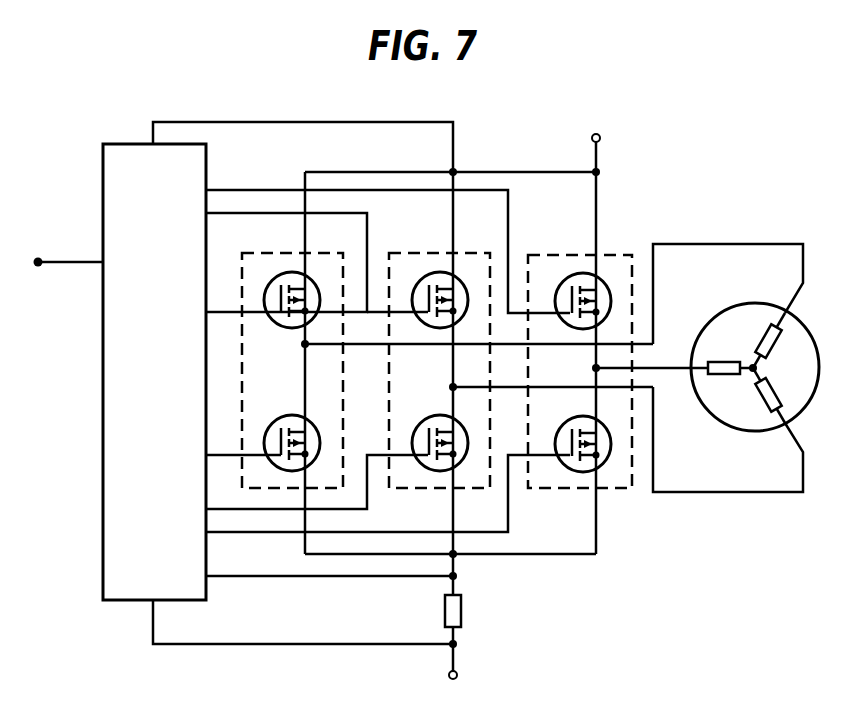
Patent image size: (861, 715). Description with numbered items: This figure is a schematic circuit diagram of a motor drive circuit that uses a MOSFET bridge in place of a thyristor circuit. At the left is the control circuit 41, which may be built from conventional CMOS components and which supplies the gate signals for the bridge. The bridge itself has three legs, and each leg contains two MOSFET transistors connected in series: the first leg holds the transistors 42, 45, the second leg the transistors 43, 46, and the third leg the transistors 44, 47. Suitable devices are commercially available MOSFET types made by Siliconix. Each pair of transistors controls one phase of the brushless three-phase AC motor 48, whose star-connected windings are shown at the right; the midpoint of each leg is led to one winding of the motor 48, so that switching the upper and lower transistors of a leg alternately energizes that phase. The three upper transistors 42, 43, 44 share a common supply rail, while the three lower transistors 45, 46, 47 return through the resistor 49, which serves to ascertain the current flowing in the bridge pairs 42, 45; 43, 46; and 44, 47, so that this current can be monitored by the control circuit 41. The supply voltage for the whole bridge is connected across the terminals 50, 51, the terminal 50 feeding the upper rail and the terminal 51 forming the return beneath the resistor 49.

The control circuit 41 is at (103, 433).
The MOSFET transistor 42 is at (291, 329).
The MOSFET transistor 43 is at (434, 272).
The MOSFET transistor 44 is at (578, 274).
The MOSFET transistor 45 is at (291, 415).
The MOSFET transistor 46 is at (437, 415).
The MOSFET transistor 47 is at (575, 418).
The brushless three-phase AC motor 48 is at (735, 335).
The resistor 49 is at (462, 608).
The terminal 50 is at (597, 134).
The terminal 51 is at (455, 680).